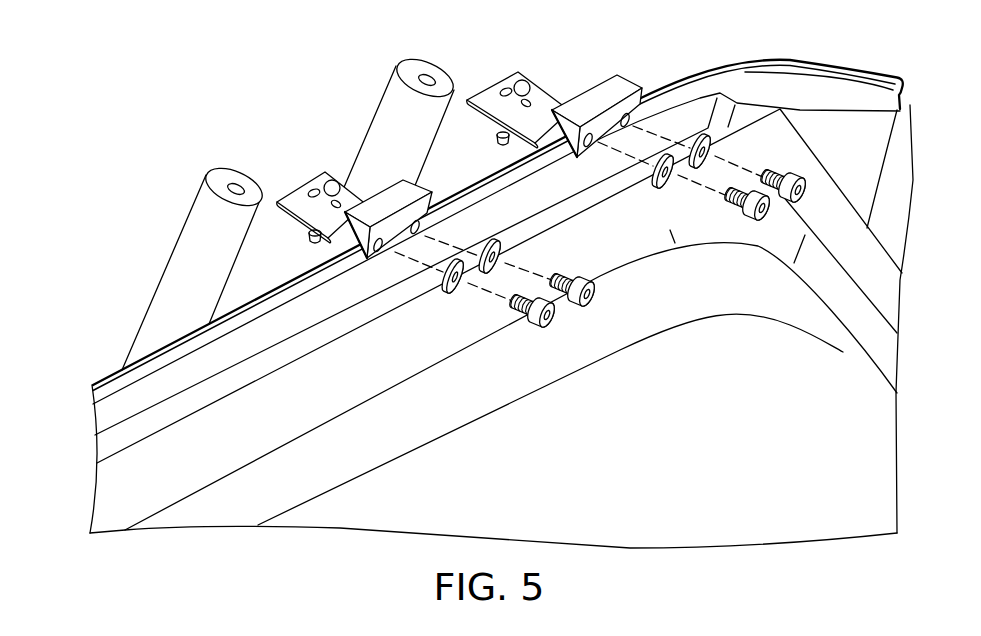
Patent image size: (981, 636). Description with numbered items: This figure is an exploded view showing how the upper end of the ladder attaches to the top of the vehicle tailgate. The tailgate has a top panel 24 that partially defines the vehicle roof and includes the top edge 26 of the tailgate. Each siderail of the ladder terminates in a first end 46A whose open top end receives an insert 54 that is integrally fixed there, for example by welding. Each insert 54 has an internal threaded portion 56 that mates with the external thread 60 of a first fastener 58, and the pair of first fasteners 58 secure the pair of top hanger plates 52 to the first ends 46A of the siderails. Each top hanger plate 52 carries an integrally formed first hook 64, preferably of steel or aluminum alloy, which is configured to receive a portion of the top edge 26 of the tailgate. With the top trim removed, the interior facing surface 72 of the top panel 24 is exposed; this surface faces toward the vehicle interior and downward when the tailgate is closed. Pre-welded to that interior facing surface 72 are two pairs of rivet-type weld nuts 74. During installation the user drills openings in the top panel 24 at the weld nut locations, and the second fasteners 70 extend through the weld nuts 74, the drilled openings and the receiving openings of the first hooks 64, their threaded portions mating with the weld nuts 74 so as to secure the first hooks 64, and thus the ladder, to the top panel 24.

The top panel 24 is at (685, 80).
The top edge 26 is at (79, 423).
The first end 46A is at (193, 225).
The top hanger plate 52 is at (297, 198).
The insert 54 is at (218, 178).
The internal threaded portion 56 is at (238, 183).
The first fastener 58 is at (332, 180).
The external thread 60 is at (307, 243).
The first hook 64 is at (397, 193).
The second fastener 70 is at (592, 302).
The interior facing surface 72 is at (262, 313).
The weld nut 74 is at (492, 276).